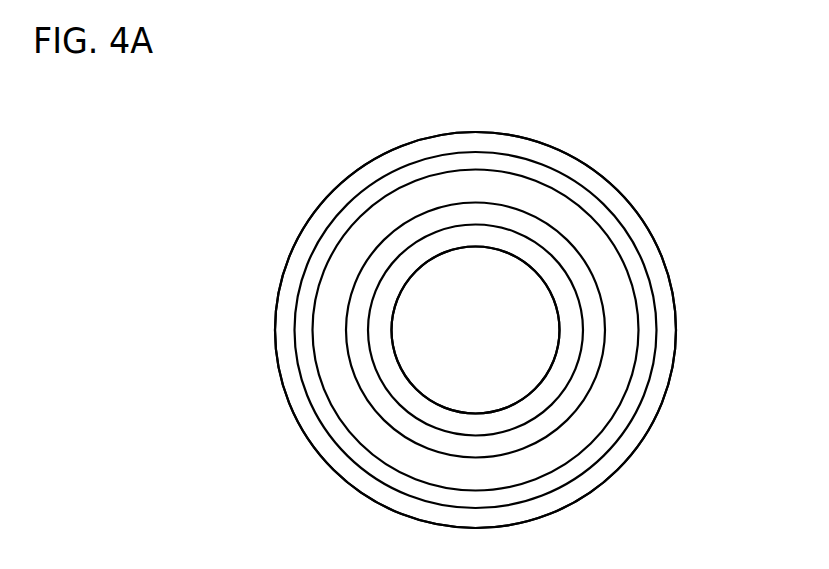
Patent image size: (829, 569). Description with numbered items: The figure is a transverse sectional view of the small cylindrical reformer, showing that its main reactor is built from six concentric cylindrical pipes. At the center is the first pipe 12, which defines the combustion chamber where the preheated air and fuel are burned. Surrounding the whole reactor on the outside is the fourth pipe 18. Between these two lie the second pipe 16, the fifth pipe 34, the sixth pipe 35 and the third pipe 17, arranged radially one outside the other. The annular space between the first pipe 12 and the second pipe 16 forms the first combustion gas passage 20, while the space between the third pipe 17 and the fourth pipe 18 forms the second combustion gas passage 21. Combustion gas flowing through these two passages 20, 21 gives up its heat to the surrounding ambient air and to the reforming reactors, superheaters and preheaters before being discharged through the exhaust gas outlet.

The first pipe 12 is at (407, 382).
The first combustion gas passage 20 is at (520, 245).
The second pipe 16 is at (582, 310).
The fifth pipe 34 is at (348, 310).
The sixth pipe 35 is at (333, 257).
The third pipe 17 is at (657, 347).
The second combustion gas passage 21 is at (657, 263).
The fourth pipe 18 is at (672, 390).